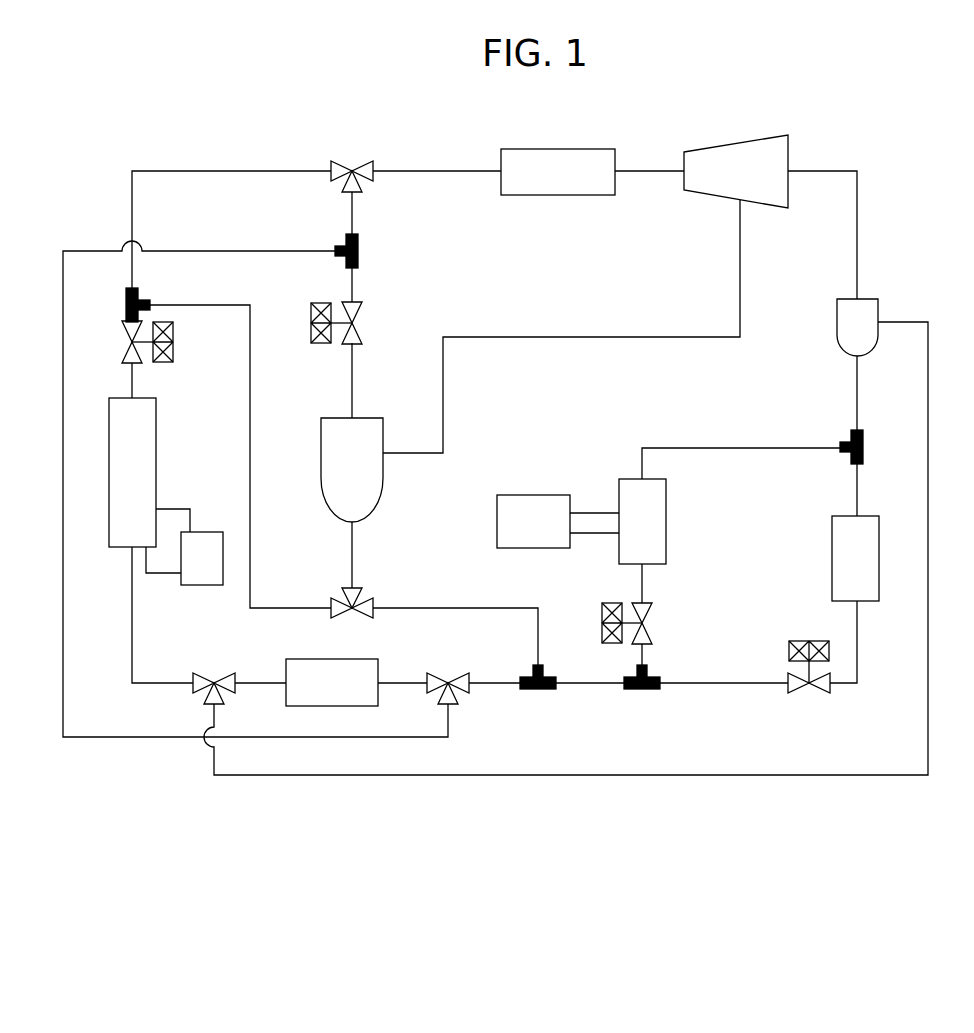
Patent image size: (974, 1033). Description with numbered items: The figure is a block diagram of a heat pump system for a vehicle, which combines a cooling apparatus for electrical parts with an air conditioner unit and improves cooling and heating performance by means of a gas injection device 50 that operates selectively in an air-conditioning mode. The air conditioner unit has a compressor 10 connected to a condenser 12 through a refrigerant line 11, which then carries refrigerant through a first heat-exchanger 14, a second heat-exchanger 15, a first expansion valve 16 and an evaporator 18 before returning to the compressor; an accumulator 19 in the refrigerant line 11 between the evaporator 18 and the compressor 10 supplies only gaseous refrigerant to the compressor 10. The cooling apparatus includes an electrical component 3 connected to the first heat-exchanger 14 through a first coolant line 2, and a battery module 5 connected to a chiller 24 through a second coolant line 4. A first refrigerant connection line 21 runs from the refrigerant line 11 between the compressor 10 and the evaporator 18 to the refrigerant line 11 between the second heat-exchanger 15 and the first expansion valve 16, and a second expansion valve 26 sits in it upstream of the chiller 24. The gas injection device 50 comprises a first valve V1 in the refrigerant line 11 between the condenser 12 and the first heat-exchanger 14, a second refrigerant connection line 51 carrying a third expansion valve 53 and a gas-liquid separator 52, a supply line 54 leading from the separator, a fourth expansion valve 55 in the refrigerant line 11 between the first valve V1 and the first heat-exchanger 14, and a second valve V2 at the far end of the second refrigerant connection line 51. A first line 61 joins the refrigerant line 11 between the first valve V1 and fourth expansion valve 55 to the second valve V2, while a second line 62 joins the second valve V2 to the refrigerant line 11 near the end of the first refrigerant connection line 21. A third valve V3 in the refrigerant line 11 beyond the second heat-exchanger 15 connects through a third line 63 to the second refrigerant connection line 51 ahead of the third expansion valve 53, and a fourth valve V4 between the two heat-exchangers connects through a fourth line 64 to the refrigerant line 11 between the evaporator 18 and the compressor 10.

The compressor 10 is at (734, 143).
The refrigerant line 11 is at (222, 170).
The condenser 12 is at (558, 149).
The first heat-exchanger 14 is at (157, 427).
The second heat-exchanger 15 is at (378, 661).
The first expansion valve 16 is at (817, 693).
The evaporator 18 is at (832, 562).
The accumulator 19 is at (837, 318).
The first coolant line 2 is at (179, 509).
The first refrigerant connection line 21 is at (748, 448).
The chiller 24 is at (667, 522).
The second expansion valve 26 is at (650, 632).
The electrical component 3 is at (203, 586).
The second coolant line 4 is at (590, 514).
The battery module 5 is at (533, 495).
The gas injection device 50 is at (398, 290).
The second refrigerant connection line 51 is at (356, 214).
The gas-liquid separator 52 is at (383, 486).
The third expansion valve 53 is at (362, 334).
The supply line 54 is at (598, 337).
The fourth expansion valve 55 is at (175, 348).
The first line 61 is at (251, 436).
The second line 62 is at (461, 608).
The third line 63 is at (246, 251).
The fourth line 64 is at (560, 775).
The first valve V1 is at (353, 166).
The second valve V2 is at (362, 603).
The third valve V3 is at (455, 676).
The fourth valve V4 is at (220, 673).